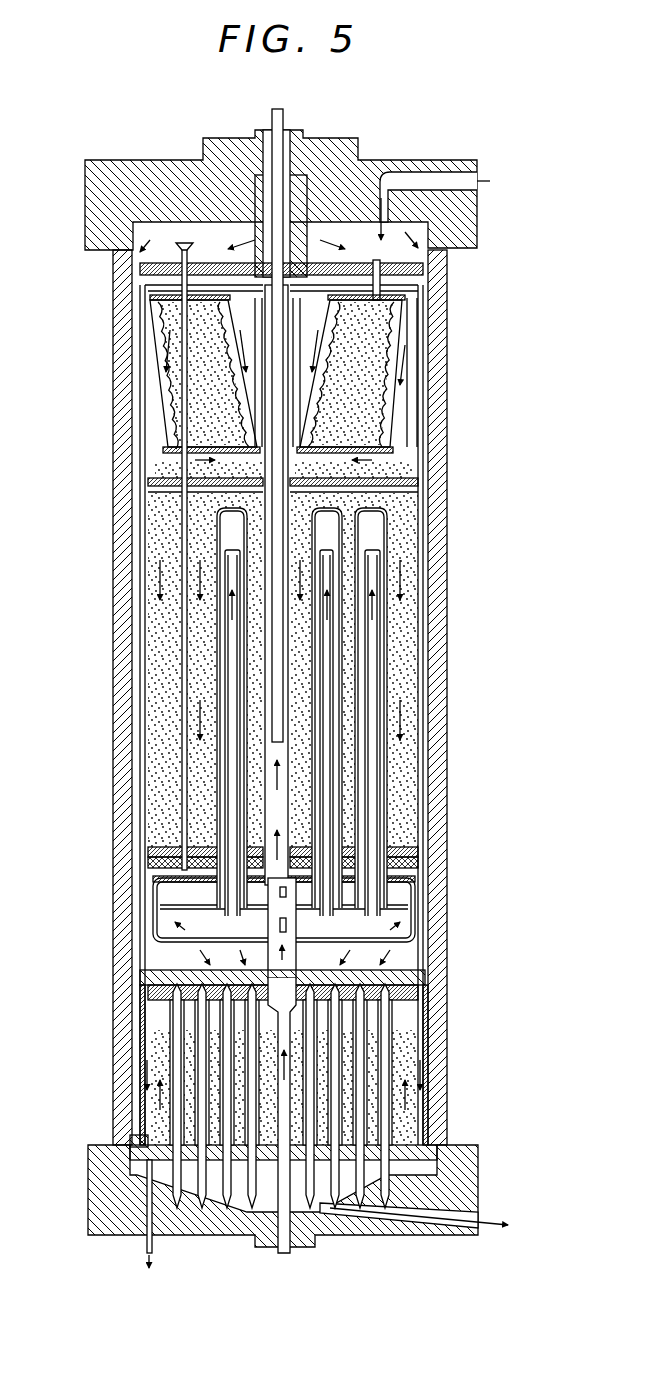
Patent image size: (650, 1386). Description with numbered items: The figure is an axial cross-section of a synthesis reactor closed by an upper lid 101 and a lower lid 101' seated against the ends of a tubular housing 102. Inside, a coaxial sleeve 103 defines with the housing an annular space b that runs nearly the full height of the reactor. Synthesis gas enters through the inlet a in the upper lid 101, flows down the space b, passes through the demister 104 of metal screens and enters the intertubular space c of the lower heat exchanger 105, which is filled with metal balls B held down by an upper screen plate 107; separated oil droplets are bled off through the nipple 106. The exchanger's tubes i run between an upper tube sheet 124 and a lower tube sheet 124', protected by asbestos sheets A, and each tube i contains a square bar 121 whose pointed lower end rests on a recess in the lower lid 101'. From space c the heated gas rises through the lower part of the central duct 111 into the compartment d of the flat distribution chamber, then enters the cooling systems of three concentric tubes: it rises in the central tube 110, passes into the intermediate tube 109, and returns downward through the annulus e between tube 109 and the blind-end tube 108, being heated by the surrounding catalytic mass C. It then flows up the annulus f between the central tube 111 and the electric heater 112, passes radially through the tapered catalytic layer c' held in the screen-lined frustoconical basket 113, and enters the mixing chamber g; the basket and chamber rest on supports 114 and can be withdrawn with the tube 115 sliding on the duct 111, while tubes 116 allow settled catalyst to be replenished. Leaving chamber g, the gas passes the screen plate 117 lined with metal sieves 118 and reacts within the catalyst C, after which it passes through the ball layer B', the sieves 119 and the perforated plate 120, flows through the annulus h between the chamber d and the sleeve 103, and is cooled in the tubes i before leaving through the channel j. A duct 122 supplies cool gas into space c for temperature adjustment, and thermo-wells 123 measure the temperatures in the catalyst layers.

The upper lid 101 is at (319, 203).
The inlet a is at (418, 175).
The tubes 116 is at (381, 281).
The tubular housing 102 is at (440, 308).
The frustoconical basket 113 is at (413, 345).
The sleeve 103 is at (390, 380).
The catalytic layer c' is at (399, 373).
The tube 115 is at (243, 375).
The supports 114 is at (150, 450).
The metal sieves 118 is at (180, 473).
The mixing chamber g is at (415, 481).
The screen plate 117 is at (420, 493).
The annular space b is at (424, 522).
The thermo-wells 123 is at (180, 527).
The blind-end tube 108 is at (387, 574).
The intermediate concentric tube 109 is at (383, 600).
The electric heater 112 is at (278, 605).
The annulus f is at (270, 641).
The annulus e is at (425, 648).
The central duct 111 is at (293, 752).
The layer of balls B' is at (141, 813).
The catalytic layer C is at (405, 800).
The sieves 119 is at (160, 852).
The central tube 110 is at (373, 817).
The perforated plate 120 is at (160, 863).
The annulus h is at (165, 882).
The distribution chamber d is at (165, 925).
The upper tube sheet 124 is at (322, 970).
The asbestos sheets A is at (146, 1012).
The upper screen plate 107 is at (430, 1000).
The square metal bars 121 is at (148, 1020).
The tubes i is at (400, 1027).
The intertubular space c is at (318, 1087).
The lower heat exchanger 105 is at (405, 1079).
The metal balls B is at (326, 1087).
The lower tube sheet 124' is at (100, 1135).
The demister 104 is at (447, 1137).
The lower lid 101' is at (323, 1196).
The nipple 106 is at (148, 1208).
The gas supply duct 122 is at (291, 1250).
The channel j is at (433, 1217).